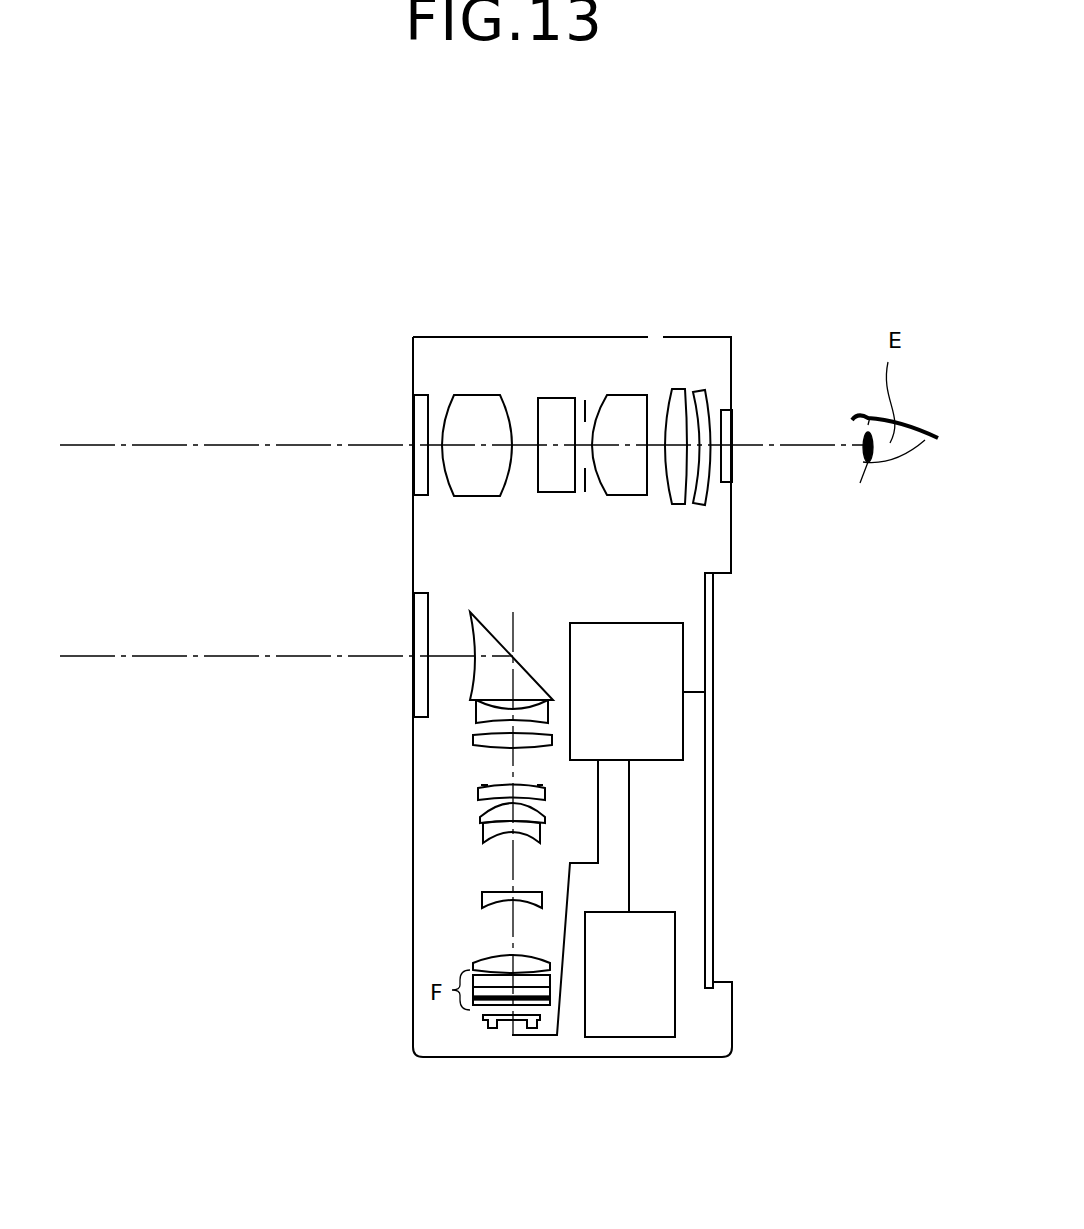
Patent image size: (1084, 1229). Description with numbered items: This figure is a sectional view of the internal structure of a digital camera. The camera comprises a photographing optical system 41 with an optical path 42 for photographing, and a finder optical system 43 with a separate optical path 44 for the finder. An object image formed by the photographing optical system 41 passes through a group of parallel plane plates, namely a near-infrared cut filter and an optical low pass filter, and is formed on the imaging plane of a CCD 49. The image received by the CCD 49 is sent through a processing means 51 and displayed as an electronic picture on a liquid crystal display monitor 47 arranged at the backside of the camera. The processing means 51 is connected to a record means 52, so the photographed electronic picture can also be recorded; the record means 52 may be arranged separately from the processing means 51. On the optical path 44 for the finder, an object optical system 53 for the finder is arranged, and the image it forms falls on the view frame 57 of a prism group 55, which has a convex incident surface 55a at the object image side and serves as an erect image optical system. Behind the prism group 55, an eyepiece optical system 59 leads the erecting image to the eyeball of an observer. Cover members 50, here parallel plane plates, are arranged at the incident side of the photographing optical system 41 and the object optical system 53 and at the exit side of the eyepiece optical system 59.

The photographing optical system 41 is at (810, 265).
The optical path for photographing 42 is at (132, 657).
The finder optical system 43 is at (430, 412).
The optical path for finder 44 is at (138, 443).
The liquid crystal display monitor 47 is at (713, 713).
The CCD 49 is at (492, 1022).
The cover member 50 is at (413, 422).
The processing means 51 is at (618, 637).
The record means 52 is at (627, 1022).
The object optical system for finder 53 is at (480, 392).
The prism group 55 is at (601, 407).
The convex incident surface 55a is at (598, 408).
The view frame 57 is at (590, 403).
The eyepiece optical system 59 is at (715, 507).